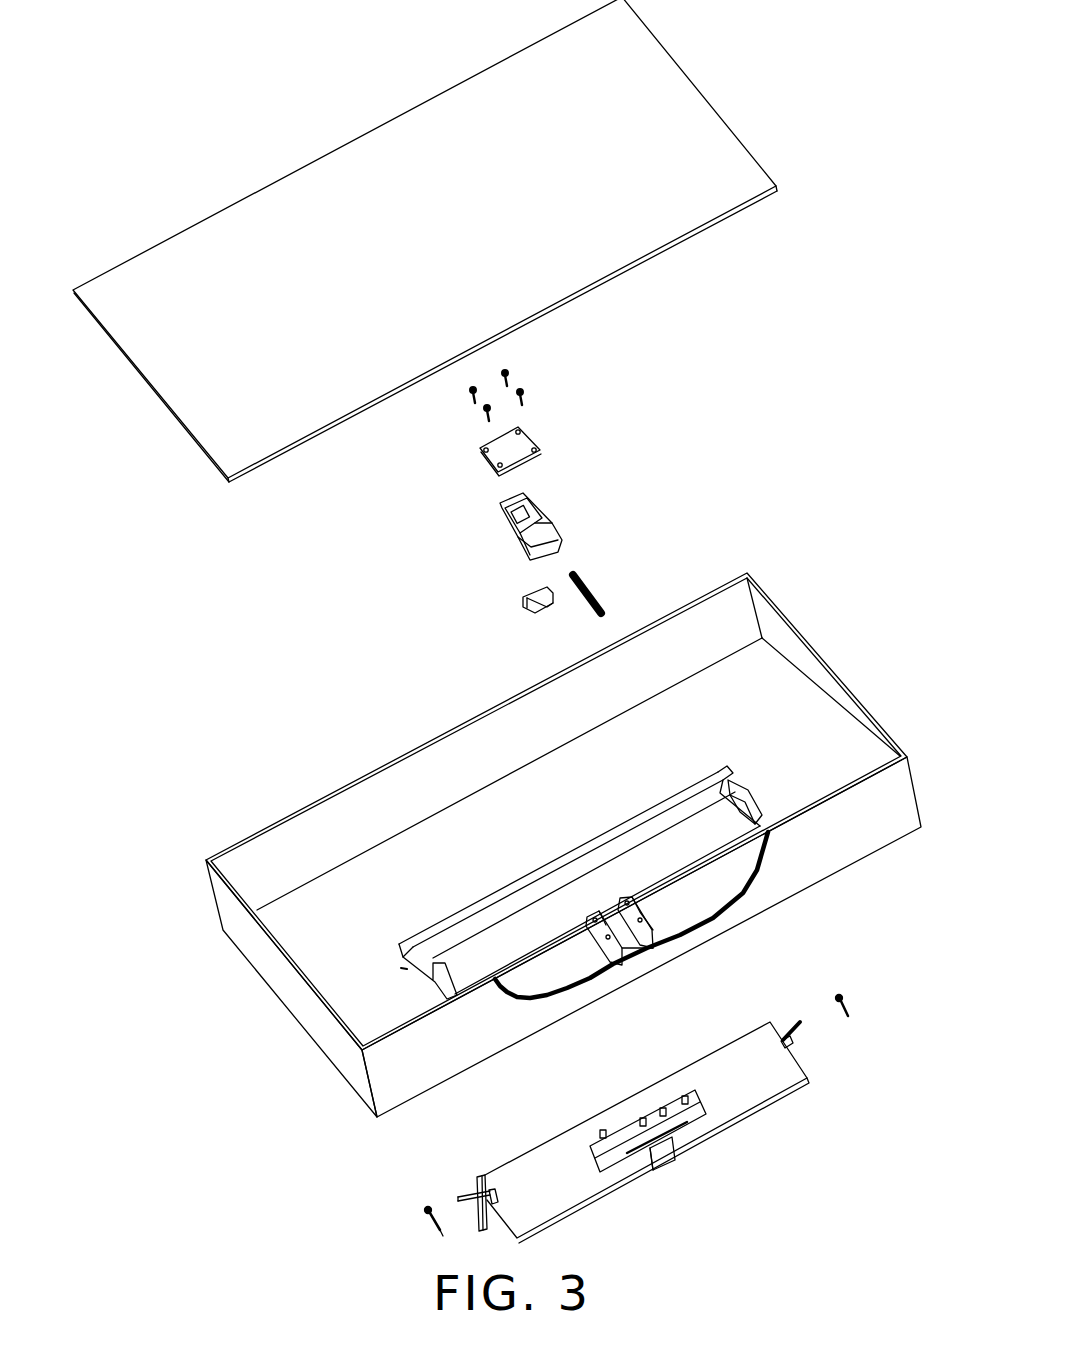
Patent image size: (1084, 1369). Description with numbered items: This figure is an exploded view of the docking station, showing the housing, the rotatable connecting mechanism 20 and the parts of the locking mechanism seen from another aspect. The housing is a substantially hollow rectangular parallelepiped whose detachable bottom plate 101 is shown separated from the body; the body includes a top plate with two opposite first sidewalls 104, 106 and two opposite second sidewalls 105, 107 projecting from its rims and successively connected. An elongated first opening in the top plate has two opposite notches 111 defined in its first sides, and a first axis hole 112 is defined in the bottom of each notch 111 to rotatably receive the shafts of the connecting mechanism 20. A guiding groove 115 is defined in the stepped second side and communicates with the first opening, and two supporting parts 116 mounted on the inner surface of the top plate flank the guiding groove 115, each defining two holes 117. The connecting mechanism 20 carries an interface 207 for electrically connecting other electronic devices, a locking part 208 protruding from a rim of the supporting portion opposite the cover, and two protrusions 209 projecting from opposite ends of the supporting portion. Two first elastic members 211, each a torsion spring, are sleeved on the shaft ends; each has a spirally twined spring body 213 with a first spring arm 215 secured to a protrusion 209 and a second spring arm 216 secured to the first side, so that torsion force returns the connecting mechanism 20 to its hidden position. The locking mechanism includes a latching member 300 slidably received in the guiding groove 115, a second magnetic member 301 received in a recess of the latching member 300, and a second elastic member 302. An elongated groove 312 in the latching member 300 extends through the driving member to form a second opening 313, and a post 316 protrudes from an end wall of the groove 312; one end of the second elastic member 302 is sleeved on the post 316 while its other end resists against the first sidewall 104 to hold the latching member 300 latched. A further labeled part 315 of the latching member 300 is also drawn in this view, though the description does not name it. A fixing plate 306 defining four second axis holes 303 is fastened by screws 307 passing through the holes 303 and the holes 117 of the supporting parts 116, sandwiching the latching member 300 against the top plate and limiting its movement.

The bottom plate 101 is at (233, 230).
The screws 307 is at (509, 373).
The second axis holes 303 is at (502, 444).
The fixing plate 306 is at (522, 441).
The latching member 300 is at (524, 520).
The latch plate 315 is at (526, 506).
The post 316 is at (516, 519).
The elongated groove 312 is at (543, 521).
The second opening 313 is at (525, 556).
The second elastic member 302 is at (590, 580).
The second magnetic member 301 is at (527, 601).
The second sidewall 105 is at (262, 958).
The first sidewall 104 is at (419, 1068).
The second sidewall 107 is at (787, 645).
The first sidewall 106 is at (385, 795).
The notches 111 is at (746, 805).
The first axis hole 112 is at (738, 790).
The guiding groove 115 is at (652, 962).
The supporting parts 116 is at (643, 908).
The holes 117 is at (660, 915).
The connecting mechanism 20 is at (671, 1138).
The interface 207 is at (645, 1128).
The locking part 208 is at (663, 1152).
The protrusions 209 is at (797, 1040).
The first elastic members 211 is at (355, 1228).
The spring body 213 is at (426, 1208).
The second spring arm 216 is at (430, 1222).
The first spring arm 215 is at (392, 1251).